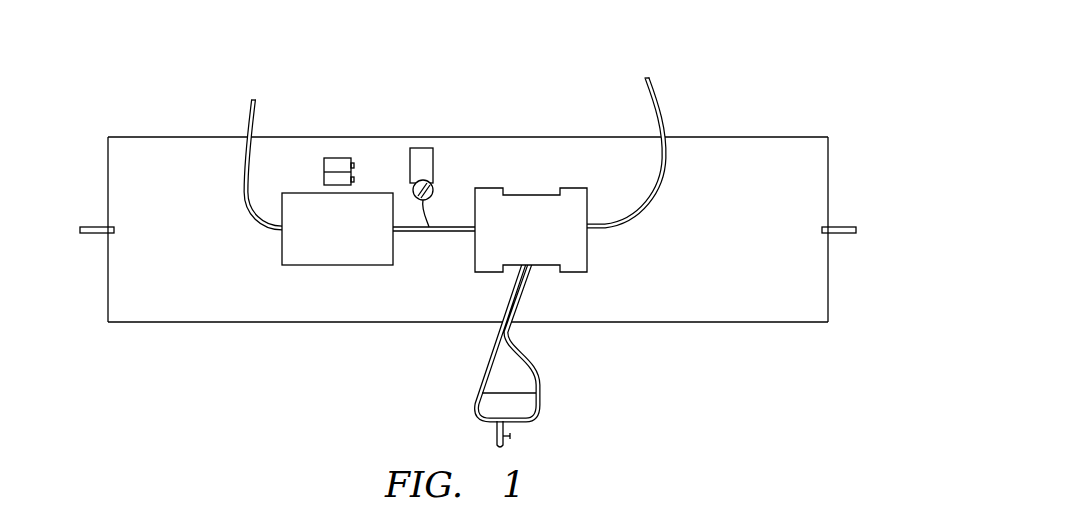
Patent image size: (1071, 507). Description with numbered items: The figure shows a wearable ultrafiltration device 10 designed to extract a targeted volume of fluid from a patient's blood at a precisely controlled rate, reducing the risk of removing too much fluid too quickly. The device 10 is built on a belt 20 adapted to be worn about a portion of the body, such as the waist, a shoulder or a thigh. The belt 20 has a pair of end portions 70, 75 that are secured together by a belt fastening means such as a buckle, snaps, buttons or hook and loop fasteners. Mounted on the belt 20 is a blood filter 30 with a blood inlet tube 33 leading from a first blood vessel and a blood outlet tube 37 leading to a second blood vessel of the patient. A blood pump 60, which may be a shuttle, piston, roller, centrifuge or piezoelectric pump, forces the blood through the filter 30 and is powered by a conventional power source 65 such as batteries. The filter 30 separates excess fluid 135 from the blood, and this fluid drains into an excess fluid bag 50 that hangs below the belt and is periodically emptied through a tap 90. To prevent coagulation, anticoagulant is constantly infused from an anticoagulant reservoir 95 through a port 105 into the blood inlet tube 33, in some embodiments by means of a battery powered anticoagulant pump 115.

The ultrafiltration device 10 is at (468, 226).
The belt 20 is at (721, 298).
The blood filter 30 is at (574, 273).
The blood inlet tube 33 is at (257, 118).
The blood outlet tube 37 is at (649, 104).
The excess fluid bag 50 is at (534, 370).
The blood pump 60 is at (340, 266).
The power source 65 is at (336, 158).
The end portion 70 is at (102, 290).
The end portion 75 is at (830, 290).
The tap 90 is at (516, 440).
The anticoagulant reservoir 95 is at (420, 148).
The port 105 is at (431, 222).
The anticoagulant pump 115 is at (413, 192).
The excess fluid 135 is at (518, 408).